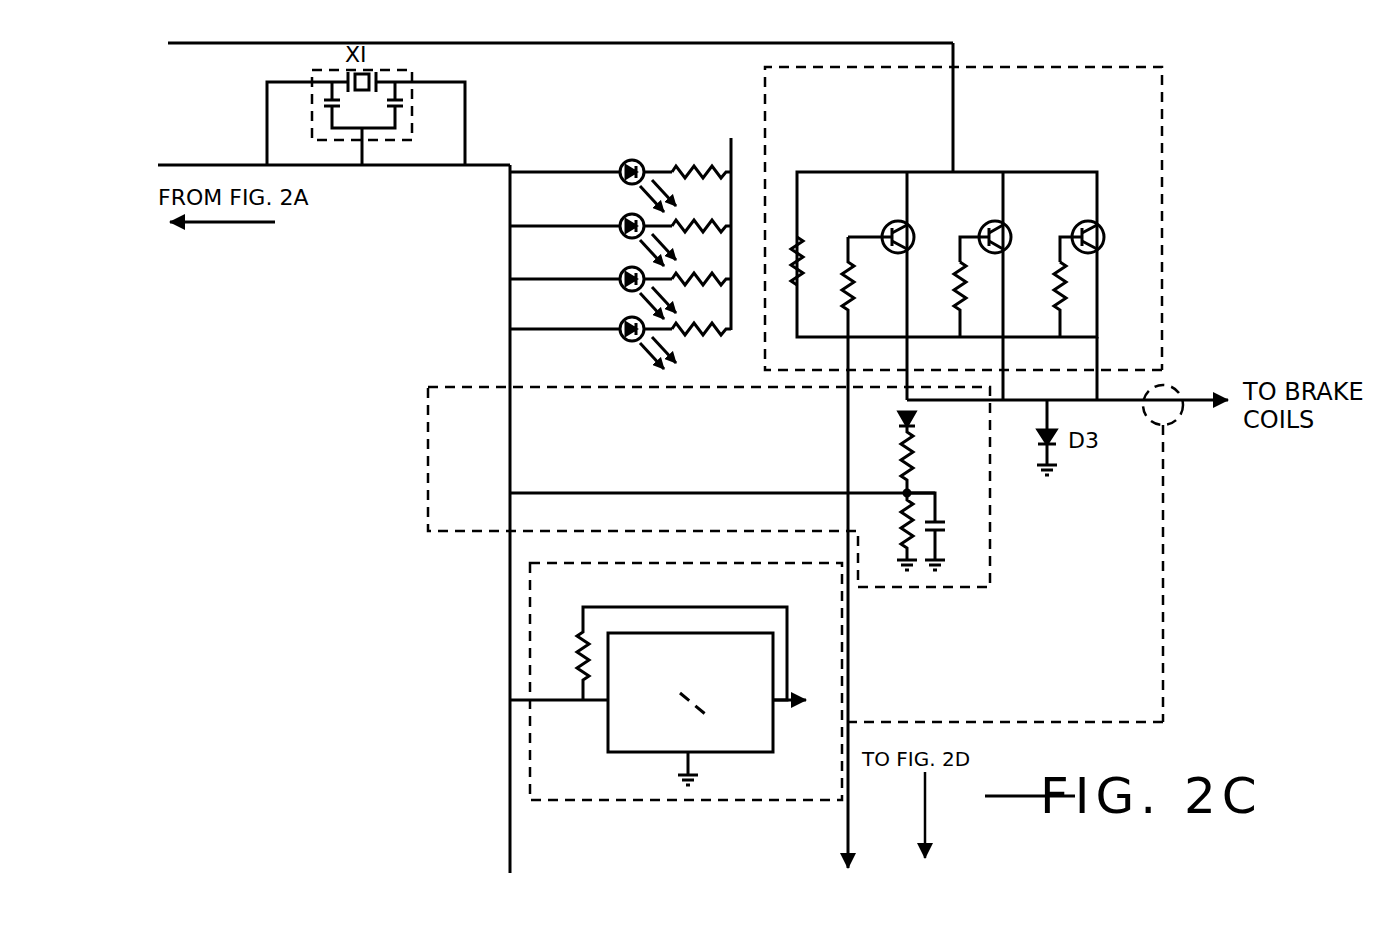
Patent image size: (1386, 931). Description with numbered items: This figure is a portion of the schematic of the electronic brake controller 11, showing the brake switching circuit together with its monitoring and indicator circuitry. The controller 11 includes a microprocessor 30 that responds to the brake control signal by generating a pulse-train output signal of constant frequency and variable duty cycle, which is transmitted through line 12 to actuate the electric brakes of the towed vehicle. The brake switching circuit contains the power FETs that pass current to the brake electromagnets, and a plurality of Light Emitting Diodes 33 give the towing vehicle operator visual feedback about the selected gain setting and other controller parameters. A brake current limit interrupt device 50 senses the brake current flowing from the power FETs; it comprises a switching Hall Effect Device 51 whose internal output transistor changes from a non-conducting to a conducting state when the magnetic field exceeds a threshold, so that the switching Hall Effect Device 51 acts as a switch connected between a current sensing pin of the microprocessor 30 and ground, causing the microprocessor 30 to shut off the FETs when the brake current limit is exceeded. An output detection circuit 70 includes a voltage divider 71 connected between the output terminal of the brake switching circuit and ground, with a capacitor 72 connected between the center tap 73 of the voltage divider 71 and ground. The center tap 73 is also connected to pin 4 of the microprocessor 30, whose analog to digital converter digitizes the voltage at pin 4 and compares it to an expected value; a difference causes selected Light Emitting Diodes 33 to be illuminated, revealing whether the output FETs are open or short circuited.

The pin 4 is at (710, 494).
The controller 11 is at (1170, 180).
The line 12 is at (1180, 396).
The microprocessor 30 is at (336, 322).
The Light Emitting Diodes 33 is at (640, 152).
The brake current limit interrupt device 50 is at (550, 778).
The switching Hall Effect Device 51 is at (712, 733).
The output detection circuit 70 is at (487, 413).
The voltage divider 71 is at (895, 480).
The capacitor 72 is at (952, 516).
The center tap 73 is at (912, 490).